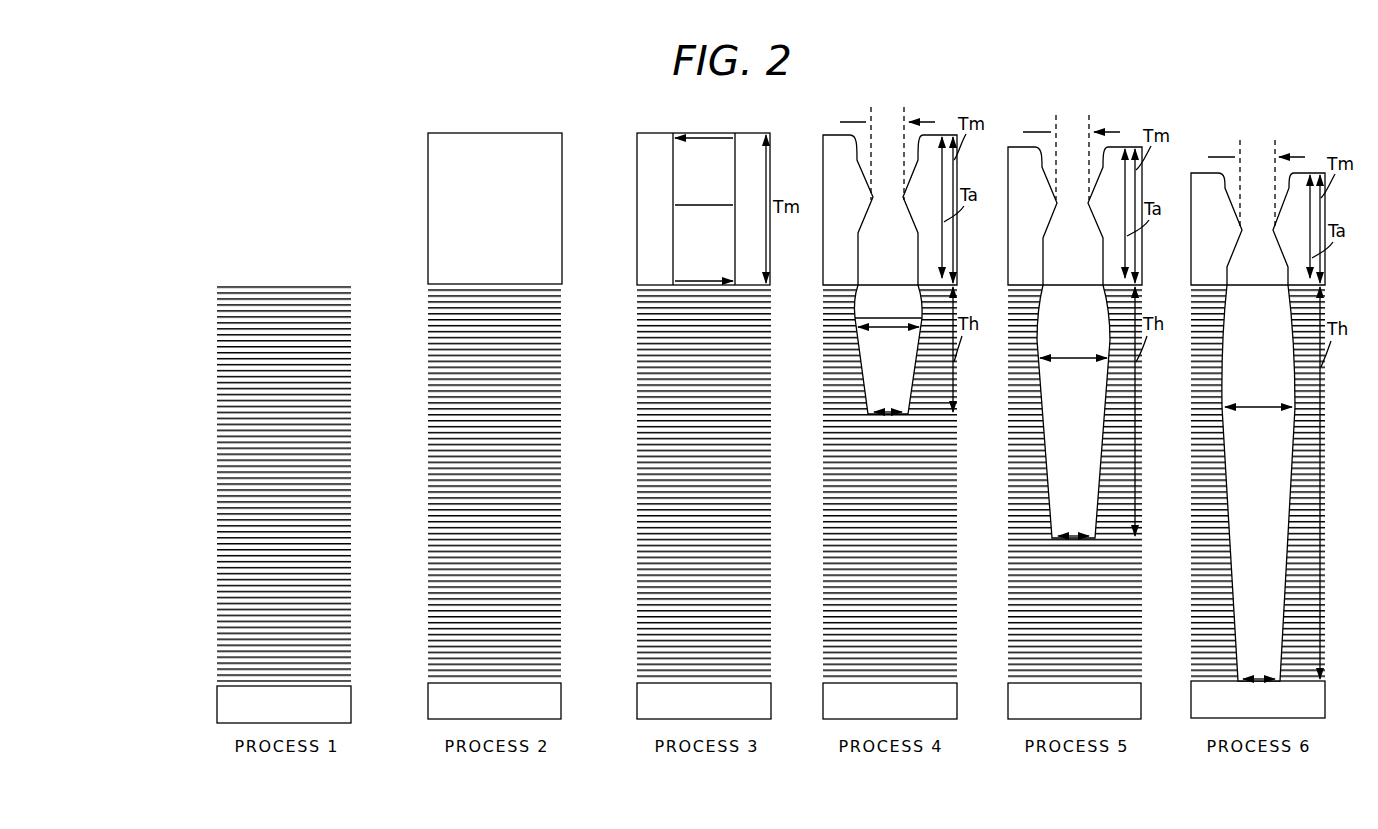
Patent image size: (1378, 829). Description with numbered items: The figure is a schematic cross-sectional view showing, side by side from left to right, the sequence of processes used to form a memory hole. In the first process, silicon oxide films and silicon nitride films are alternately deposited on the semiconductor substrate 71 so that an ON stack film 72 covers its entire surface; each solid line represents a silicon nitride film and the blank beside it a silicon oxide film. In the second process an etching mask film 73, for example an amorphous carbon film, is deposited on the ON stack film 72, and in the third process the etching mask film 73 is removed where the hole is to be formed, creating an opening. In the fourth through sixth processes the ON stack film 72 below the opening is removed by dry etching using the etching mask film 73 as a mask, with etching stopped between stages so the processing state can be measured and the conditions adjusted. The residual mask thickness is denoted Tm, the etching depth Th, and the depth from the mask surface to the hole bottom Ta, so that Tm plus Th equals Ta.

The semiconductor substrate 71 is at (218, 714).
The ON stack film 72 is at (212, 287).
The etching mask film 73 is at (432, 223).